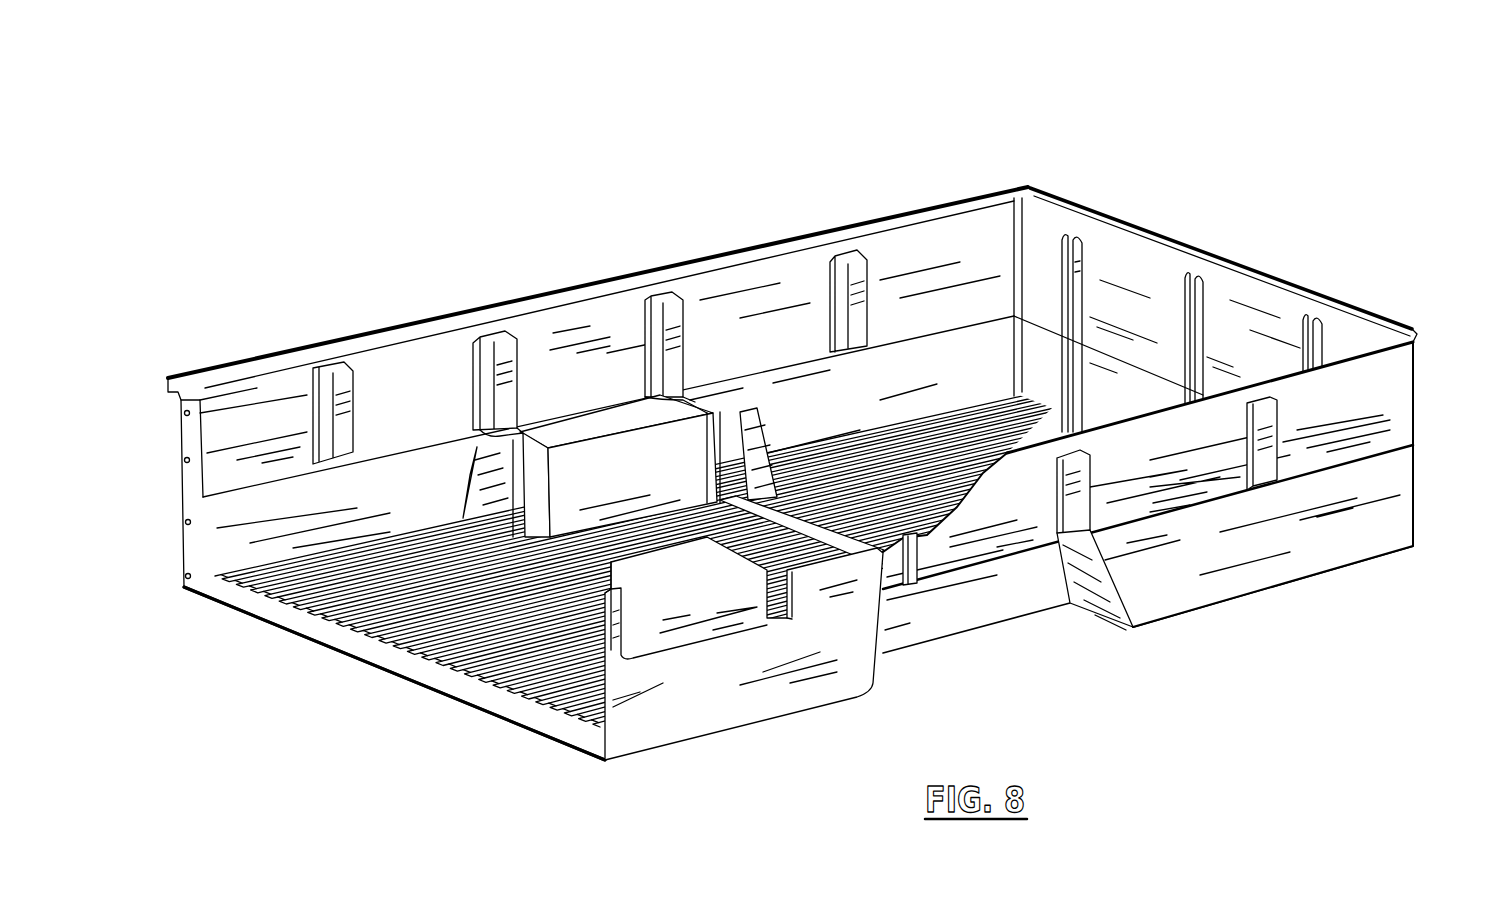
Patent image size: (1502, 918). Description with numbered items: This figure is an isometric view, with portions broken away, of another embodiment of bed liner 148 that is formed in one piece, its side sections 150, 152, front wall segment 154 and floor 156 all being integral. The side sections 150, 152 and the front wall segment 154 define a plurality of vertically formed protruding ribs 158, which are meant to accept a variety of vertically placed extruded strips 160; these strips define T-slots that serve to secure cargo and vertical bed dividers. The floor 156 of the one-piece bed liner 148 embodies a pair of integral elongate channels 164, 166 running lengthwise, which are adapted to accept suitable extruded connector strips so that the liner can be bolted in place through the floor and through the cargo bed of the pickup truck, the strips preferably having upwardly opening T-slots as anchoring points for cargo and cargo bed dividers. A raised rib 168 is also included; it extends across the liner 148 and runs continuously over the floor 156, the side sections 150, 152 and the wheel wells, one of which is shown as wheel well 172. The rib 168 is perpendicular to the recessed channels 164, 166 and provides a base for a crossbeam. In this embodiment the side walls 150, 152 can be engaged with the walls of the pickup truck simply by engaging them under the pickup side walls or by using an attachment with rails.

The bed liner 148 is at (753, 180).
The side section 150 is at (594, 293).
The side section 152 is at (1402, 388).
The front wall segment 154 is at (1237, 268).
The floor 156 is at (440, 676).
The protruding ribs 158 is at (355, 418).
The extruded strips 160 is at (1056, 264).
The elongate channel 164 is at (296, 610).
The elongate channel 166 is at (563, 703).
The raised rib 168 is at (723, 460).
The wheel well 172 is at (1103, 593).